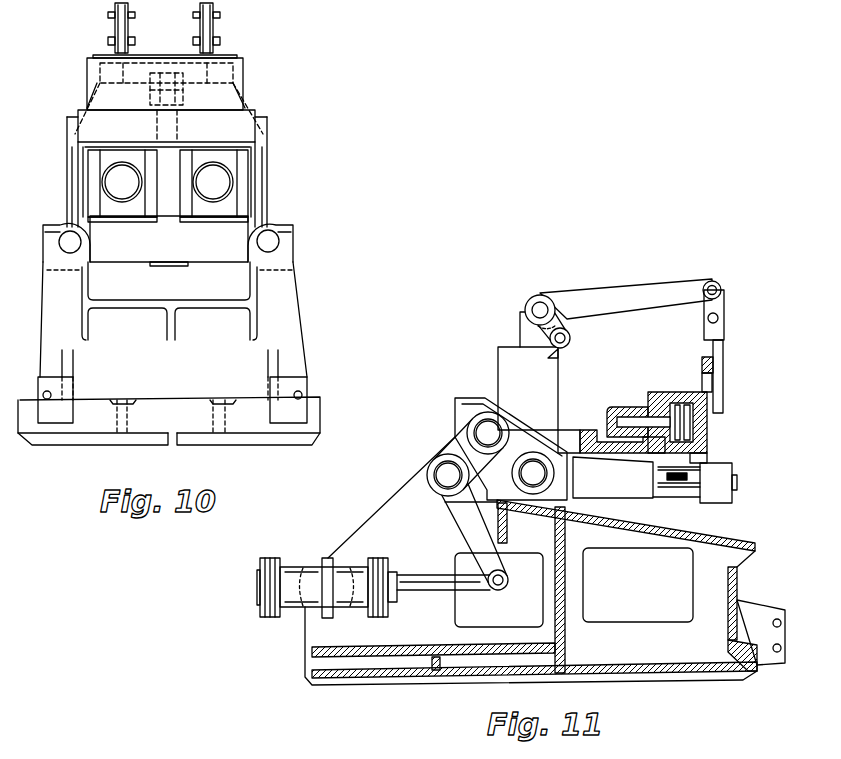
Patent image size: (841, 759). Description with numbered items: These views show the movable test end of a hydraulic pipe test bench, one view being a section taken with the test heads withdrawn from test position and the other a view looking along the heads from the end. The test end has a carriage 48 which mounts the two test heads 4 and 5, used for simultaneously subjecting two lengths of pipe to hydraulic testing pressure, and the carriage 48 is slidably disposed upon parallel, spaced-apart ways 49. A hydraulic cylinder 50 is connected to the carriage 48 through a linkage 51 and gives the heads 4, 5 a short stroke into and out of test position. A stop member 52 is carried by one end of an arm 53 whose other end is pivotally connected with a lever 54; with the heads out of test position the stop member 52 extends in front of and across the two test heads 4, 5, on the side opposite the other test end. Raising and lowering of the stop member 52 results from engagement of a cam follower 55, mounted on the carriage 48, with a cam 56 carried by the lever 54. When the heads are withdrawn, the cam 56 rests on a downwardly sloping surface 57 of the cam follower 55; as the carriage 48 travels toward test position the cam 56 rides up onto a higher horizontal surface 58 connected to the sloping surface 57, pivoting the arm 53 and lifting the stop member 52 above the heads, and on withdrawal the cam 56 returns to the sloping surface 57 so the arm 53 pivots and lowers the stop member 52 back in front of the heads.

In FIG. 10, the test head 4 is at (216, 178).
In FIG. 10, the test head 5 is at (118, 177).
In FIG. 11, the test head 5 is at (703, 442).
In FIG. 11, the carriage 48 is at (663, 500).
In FIG. 10, the ways 49 is at (70, 242).
In FIG. 11, the ways 49 is at (687, 470).
In FIG. 11, the hydraulic cylinder 50 is at (300, 565).
In FIG. 11, the linkage 51 is at (454, 446).
In FIG. 11, the stop member 52 is at (724, 396).
In FIG. 11, the arm 53 is at (628, 284).
In FIG. 11, the lever 54 is at (522, 326).
In FIG. 11, the cam follower 55 is at (553, 393).
In FIG. 11, the cam 56 is at (571, 338).
In FIG. 11, the downwardly sloping surface 57 is at (559, 358).
In FIG. 11, the horizontal surface 58 is at (507, 347).